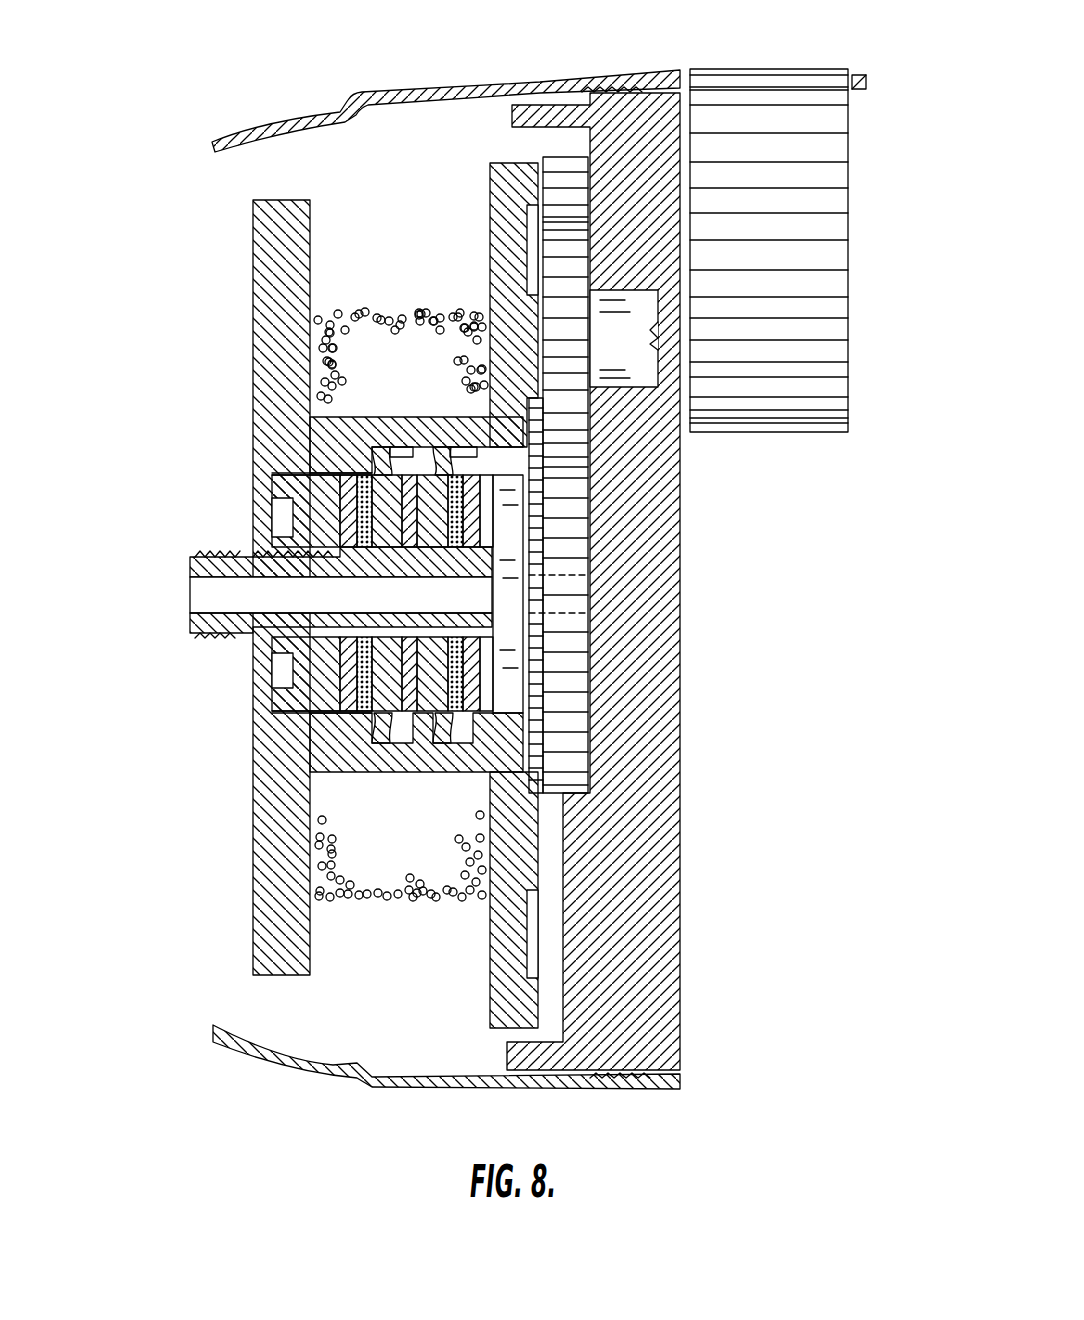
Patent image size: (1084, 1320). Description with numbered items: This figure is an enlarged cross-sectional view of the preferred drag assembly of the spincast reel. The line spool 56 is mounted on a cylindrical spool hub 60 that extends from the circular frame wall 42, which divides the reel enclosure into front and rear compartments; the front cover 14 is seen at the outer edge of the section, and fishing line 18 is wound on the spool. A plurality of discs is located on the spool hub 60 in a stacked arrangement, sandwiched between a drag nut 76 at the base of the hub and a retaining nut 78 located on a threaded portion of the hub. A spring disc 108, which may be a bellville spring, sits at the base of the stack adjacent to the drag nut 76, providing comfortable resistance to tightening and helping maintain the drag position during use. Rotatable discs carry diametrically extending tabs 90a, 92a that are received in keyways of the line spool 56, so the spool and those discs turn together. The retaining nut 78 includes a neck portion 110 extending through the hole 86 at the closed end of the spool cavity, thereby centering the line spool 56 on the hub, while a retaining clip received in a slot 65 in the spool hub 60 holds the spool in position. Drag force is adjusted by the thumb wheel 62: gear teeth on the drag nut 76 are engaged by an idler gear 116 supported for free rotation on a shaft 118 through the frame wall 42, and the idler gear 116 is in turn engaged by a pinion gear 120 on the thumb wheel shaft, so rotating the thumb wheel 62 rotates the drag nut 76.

The front cover 14 is at (300, 126).
The fishing line 18 is at (372, 280).
The frame wall 42 is at (680, 975).
The line spool 56 is at (250, 265).
The spool hub 60 is at (194, 544).
The thumb wheel 62 is at (748, 100).
The slot 65 is at (247, 558).
The drag nut 76 is at (565, 690).
The retaining nut 78 is at (291, 728).
The hole 86 is at (282, 538).
The tab 90a is at (455, 468).
The tab 92a is at (390, 470).
The spring disc 108 is at (478, 740).
The neck portion 110 is at (285, 660).
The idler gear 116 is at (563, 318).
The shaft 118 is at (644, 298).
The pinion gear 120 is at (572, 176).